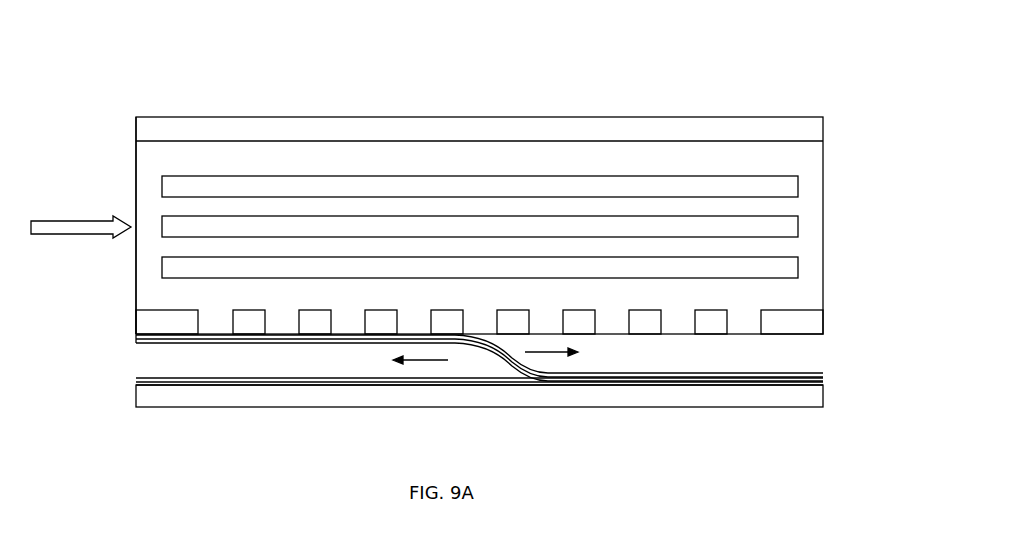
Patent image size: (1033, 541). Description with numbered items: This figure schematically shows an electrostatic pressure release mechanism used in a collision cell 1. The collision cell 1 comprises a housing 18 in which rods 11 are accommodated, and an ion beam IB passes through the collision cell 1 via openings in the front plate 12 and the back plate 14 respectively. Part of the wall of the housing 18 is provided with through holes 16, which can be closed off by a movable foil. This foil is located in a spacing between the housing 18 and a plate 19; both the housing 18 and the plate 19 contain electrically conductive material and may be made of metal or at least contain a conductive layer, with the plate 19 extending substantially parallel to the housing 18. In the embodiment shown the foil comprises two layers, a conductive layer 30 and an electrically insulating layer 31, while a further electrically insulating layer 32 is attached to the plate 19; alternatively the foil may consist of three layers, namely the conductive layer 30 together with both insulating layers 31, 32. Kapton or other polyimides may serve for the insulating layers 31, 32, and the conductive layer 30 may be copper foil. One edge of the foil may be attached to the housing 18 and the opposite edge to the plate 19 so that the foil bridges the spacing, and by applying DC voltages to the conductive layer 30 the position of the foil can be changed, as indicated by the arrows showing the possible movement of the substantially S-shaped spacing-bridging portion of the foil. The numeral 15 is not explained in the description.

The collision cell 1 is at (729, 58).
The rods 11 is at (428, 175).
The front plate 12 is at (136, 272).
The back plate 14 is at (823, 160).
The emitted light 15 is at (823, 227).
The through holes 16 is at (672, 322).
The housing 18 is at (232, 117).
The plate 19 is at (823, 395).
The conductive layer 30 is at (136, 340).
The electrically insulating layer 31 is at (823, 372).
The further electrically insulating layer 32 is at (823, 384).
The ion beam IB is at (73, 222).